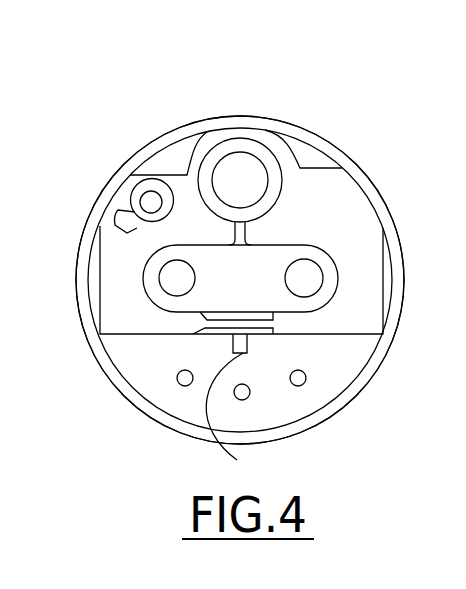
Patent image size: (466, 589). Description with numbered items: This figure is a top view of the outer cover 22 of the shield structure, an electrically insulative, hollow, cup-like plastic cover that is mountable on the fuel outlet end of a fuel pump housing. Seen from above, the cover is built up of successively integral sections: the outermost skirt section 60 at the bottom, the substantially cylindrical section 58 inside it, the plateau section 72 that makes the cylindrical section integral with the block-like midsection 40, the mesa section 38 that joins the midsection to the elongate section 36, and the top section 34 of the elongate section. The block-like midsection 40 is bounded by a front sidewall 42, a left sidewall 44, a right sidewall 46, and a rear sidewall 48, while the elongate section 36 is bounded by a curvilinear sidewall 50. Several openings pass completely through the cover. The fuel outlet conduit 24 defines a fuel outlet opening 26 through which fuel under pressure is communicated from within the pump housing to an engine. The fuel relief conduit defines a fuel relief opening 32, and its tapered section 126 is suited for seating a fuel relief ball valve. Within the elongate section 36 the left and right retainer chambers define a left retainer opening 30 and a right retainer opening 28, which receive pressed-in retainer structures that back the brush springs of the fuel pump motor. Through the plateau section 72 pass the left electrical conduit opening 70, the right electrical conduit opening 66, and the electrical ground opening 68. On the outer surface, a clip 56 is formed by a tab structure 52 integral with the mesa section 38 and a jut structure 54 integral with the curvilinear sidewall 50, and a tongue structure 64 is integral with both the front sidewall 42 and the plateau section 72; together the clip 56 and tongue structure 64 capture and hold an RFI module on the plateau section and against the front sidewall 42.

The outer cover 22 is at (162, 60).
The fuel outlet conduit 24 is at (268, 157).
The fuel outlet opening 26 is at (243, 183).
The right retainer opening 28 is at (304, 280).
The left retainer opening 30 is at (177, 276).
The fuel relief opening 32 is at (180, 188).
The top section 34 is at (225, 291).
The elongate section 36 is at (341, 267).
The mesa section 38 is at (343, 308).
The block-like midsection 40 is at (134, 340).
The front sidewall 42 is at (370, 340).
The left sidewall 44 is at (88, 265).
The right sidewall 46 is at (383, 290).
The rear sidewall 48 is at (167, 170).
The curvilinear sidewall 50 is at (143, 285).
The tab structure 52 is at (276, 330).
The jut structure 54 is at (207, 349).
The clip 56 is at (264, 304).
The cylindrical section 58 is at (162, 412).
The skirt section 60 is at (404, 327).
The tongue structure 64 is at (240, 416).
The right electrical conduit opening 66 is at (308, 379).
The electrical ground opening 68 is at (250, 399).
The left electrical conduit opening 70 is at (187, 388).
The plateau section 72 is at (150, 387).
The tapered section 126 is at (152, 202).